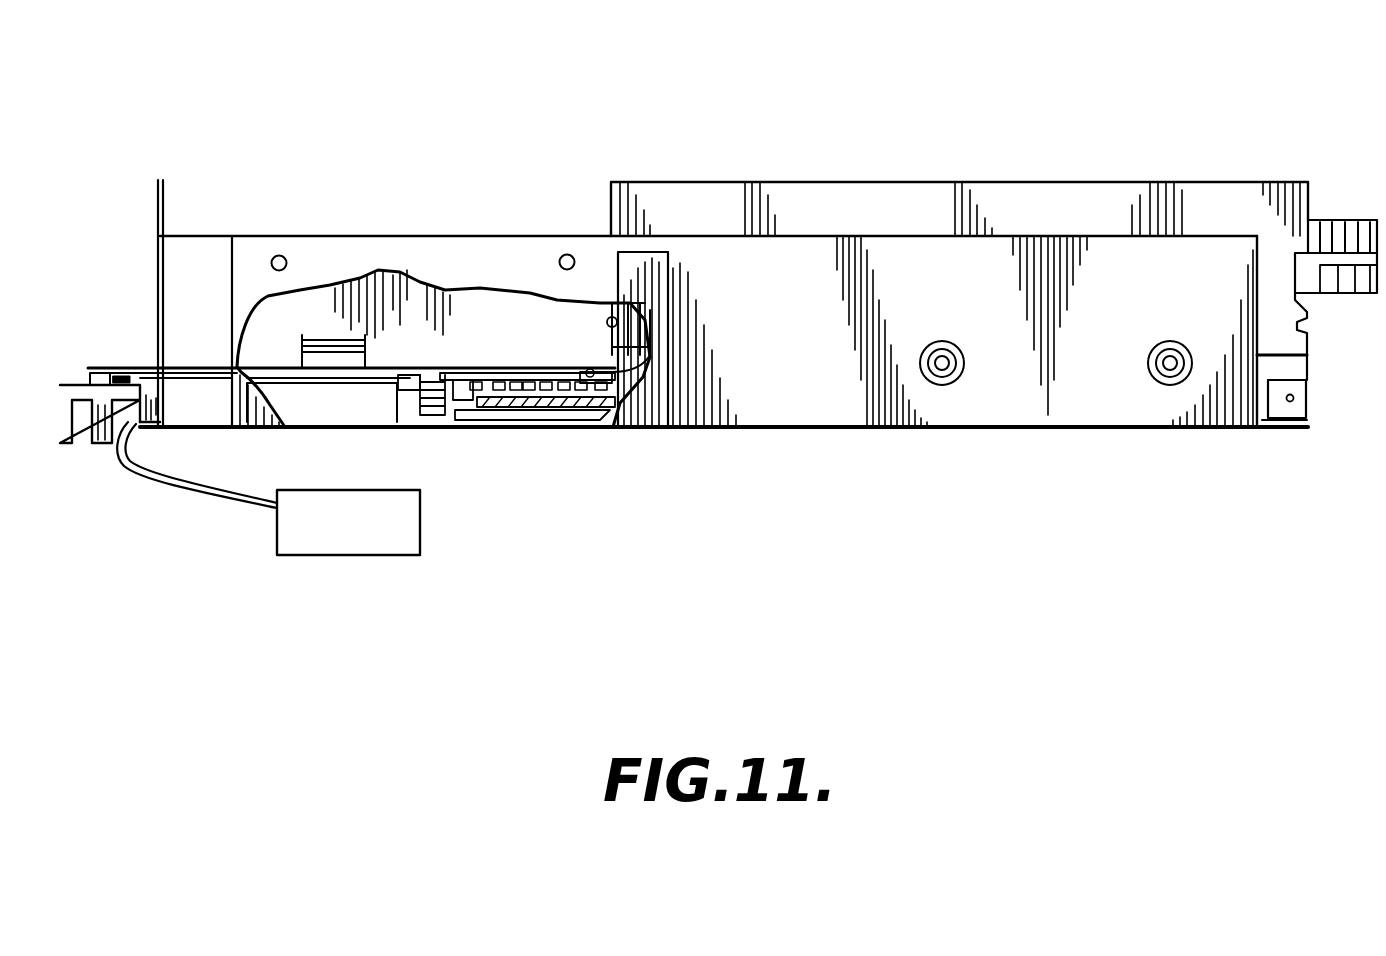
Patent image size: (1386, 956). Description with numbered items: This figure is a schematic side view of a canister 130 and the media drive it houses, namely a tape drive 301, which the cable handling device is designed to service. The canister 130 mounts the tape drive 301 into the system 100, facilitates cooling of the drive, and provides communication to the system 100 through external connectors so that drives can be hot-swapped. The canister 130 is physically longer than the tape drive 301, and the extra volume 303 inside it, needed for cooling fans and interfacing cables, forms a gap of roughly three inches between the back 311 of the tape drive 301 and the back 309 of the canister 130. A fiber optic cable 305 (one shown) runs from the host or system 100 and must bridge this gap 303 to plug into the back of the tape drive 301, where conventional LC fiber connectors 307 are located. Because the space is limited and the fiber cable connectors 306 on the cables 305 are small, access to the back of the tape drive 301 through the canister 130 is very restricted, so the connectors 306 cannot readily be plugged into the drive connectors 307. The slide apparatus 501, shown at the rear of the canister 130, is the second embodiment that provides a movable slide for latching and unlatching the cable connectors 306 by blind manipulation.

The canister 130 is at (577, 138).
The back of the canister 309 is at (162, 260).
The extra volume 303 is at (430, 293).
The slide apparatus 501 is at (77, 356).
The tape drive 301 is at (580, 370).
The fiber cable connectors 306 is at (430, 373).
The back of the tape drive 311 is at (437, 373).
The LC fiber connectors 307 is at (440, 417).
The fiber optic cables 305 is at (140, 467).
The system 100 is at (348, 522).